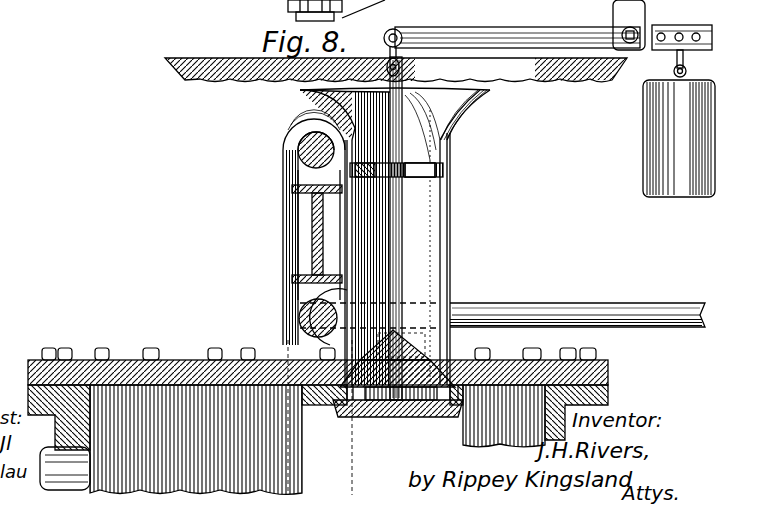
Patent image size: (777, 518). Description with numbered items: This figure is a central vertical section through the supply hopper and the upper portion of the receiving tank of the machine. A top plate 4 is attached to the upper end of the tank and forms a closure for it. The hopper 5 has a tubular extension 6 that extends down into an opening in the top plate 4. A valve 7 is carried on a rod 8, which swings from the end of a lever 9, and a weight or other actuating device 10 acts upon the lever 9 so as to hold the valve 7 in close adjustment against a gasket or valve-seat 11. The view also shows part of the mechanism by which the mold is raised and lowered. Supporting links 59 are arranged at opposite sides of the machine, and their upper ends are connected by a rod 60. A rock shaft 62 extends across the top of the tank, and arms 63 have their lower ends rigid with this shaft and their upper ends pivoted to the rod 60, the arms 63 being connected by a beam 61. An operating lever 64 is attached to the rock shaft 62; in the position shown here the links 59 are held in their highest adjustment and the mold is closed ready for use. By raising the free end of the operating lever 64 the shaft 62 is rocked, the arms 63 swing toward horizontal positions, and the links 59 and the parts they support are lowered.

The top plate 4 is at (124, 370).
The hopper 5 is at (182, 73).
The tubular extension 6 is at (450, 243).
The valve 7 is at (488, 298).
The rod 8 is at (403, 208).
The lever 9 is at (501, 32).
The weight 10 is at (660, 142).
The gasket or valve-seat 11 is at (337, 403).
The supporting links 59 is at (286, 6).
The rod 60 is at (300, 143).
The beam 61 is at (315, 223).
The rock shaft 62 is at (298, 312).
The arms 63 is at (298, 290).
The operating lever 64 is at (617, 310).